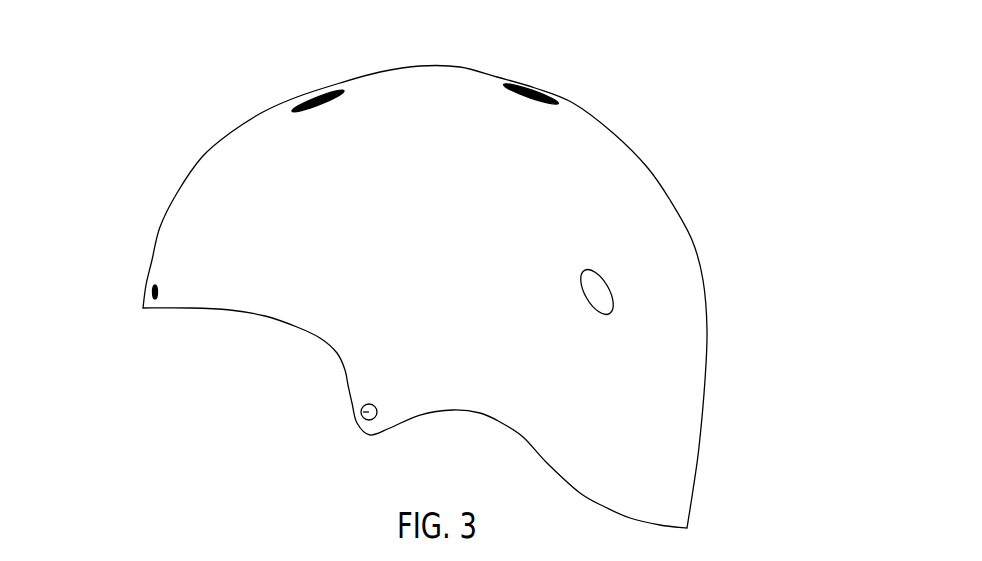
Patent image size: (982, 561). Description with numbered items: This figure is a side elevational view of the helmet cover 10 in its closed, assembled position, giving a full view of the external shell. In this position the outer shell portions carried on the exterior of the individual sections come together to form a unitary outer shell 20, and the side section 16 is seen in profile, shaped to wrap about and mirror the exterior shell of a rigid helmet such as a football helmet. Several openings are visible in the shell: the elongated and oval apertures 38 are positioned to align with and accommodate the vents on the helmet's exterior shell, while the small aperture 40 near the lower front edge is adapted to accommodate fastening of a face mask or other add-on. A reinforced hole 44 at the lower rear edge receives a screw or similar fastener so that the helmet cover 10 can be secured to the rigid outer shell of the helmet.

The helmet cover 10 is at (438, 288).
The side section 16 is at (458, 235).
The outer shell 20 is at (627, 180).
The apertures 38 is at (310, 93).
The apertures 40 is at (363, 412).
The reinforced holes 44 is at (147, 292).